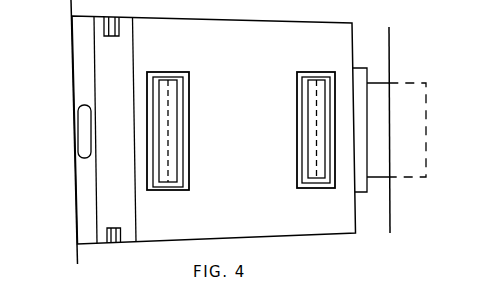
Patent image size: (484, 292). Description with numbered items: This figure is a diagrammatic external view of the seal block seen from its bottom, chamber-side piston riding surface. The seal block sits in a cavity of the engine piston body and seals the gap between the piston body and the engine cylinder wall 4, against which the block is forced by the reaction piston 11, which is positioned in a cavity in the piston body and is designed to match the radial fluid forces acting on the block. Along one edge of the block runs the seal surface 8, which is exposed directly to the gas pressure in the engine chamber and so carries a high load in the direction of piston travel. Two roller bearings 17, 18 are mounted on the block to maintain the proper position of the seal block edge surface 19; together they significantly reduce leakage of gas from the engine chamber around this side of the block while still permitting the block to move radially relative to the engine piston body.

The engine cylinder wall 4 is at (70, 30).
The seal surface 8 is at (84, 68).
The reaction piston 11 is at (373, 83).
The roller bearing 17 is at (177, 110).
The roller bearing 18 is at (300, 150).
The seal block edge surface 19 is at (108, 95).